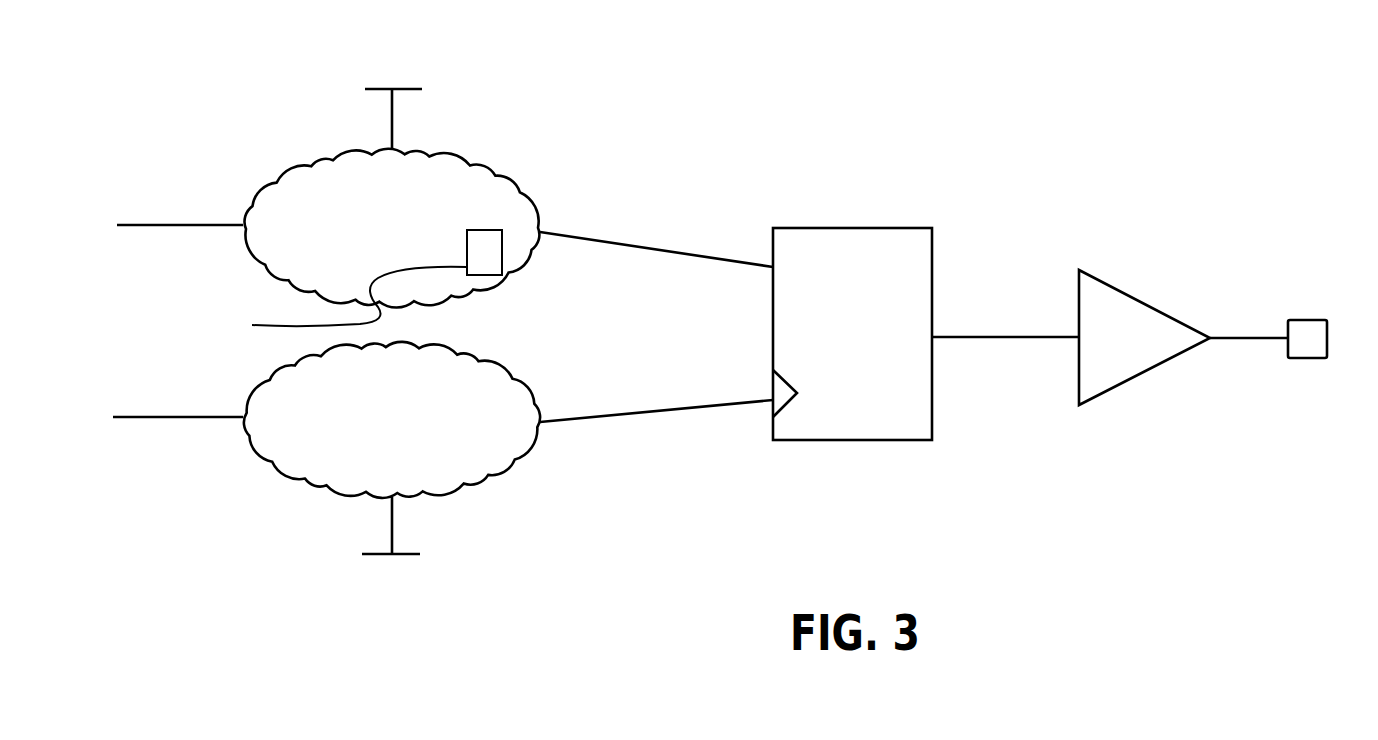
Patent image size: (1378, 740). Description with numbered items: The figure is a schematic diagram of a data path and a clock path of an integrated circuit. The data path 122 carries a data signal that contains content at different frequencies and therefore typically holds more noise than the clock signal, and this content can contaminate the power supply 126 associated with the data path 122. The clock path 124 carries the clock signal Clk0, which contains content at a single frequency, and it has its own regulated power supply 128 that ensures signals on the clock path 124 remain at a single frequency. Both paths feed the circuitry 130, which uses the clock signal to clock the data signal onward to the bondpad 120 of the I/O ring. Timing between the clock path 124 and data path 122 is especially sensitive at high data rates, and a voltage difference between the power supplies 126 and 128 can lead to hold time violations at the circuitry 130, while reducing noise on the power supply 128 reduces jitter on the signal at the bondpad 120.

The bondpad 120 is at (1312, 320).
The data path 122 is at (626, 243).
The clock path 124 is at (627, 412).
The power supply 126 is at (328, 190).
The regulated power supply 128 is at (326, 471).
The circuitry 130 is at (1030, 334).